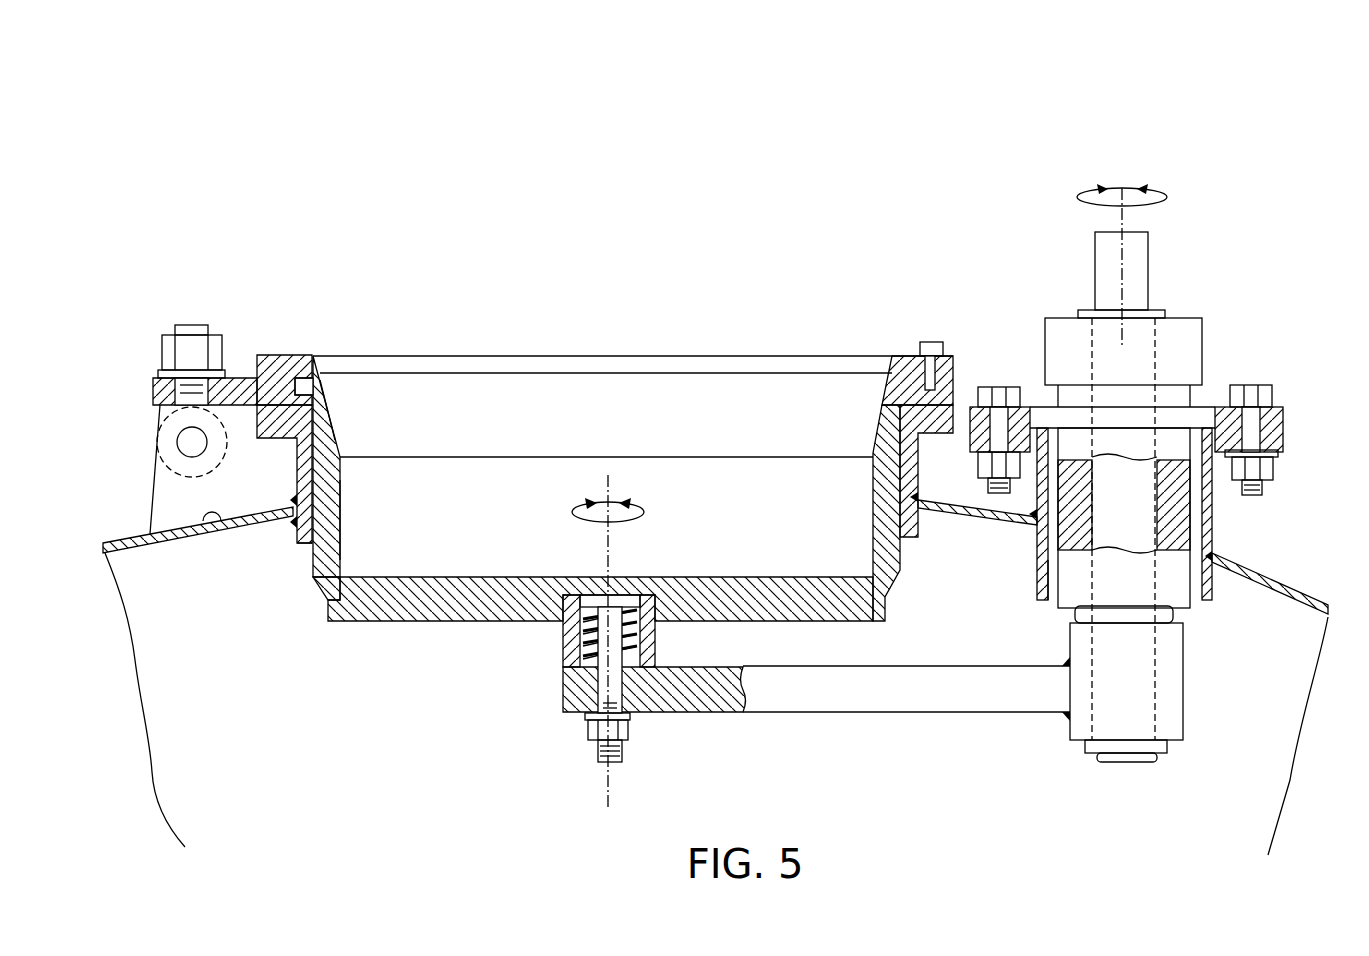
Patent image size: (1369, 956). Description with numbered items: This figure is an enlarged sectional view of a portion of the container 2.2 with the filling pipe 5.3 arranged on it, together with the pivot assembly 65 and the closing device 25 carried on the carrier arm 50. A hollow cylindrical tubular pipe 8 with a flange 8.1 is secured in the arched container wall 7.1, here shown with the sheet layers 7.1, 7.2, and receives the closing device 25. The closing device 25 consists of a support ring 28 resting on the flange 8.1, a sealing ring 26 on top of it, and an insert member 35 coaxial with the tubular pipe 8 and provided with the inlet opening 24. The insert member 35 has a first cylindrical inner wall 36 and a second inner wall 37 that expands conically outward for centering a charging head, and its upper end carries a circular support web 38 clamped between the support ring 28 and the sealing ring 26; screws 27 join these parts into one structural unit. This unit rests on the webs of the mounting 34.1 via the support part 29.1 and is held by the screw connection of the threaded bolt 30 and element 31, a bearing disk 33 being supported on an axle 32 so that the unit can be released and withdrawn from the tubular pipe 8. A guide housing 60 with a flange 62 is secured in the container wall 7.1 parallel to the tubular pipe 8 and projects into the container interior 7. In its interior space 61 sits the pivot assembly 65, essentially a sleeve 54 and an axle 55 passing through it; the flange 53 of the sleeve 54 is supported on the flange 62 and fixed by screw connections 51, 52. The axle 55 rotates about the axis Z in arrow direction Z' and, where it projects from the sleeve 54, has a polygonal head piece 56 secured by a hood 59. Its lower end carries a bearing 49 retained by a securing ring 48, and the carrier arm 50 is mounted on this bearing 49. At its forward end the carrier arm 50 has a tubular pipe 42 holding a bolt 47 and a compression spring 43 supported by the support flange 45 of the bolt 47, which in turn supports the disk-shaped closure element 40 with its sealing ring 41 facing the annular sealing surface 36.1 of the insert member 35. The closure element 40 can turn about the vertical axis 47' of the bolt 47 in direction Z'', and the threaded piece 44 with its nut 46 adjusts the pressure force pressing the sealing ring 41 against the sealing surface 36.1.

The container 2.2 is at (143, 776).
The filling pipe 5.3 is at (708, 334).
The container interior 7 is at (214, 745).
The container wall 7.1 is at (161, 538).
The sheet metal layer 7.2 is at (227, 521).
The tubular pipe 8 is at (295, 542).
The flange 8.1 is at (270, 430).
The inlet opening 24 is at (574, 404).
The closing device 25 is at (518, 770).
The sealing ring 26 is at (897, 362).
The screws 27 is at (931, 343).
The support ring 28 is at (282, 380).
The support part 29.1 is at (235, 392).
The threaded bolt 30 is at (192, 326).
The screw connection element 31 is at (165, 352).
The axle 32 is at (190, 442).
The bearing disk 33 is at (176, 462).
The mounting 34.1 is at (140, 501).
The insert member 35 is at (330, 500).
The first cylindrical inner wall 36 is at (345, 528).
The sealing surface 36.1 is at (893, 582).
The second inner wall 37 is at (335, 427).
The support web 38 is at (307, 384).
The closure element 40 is at (400, 605).
The sealing ring 41 is at (320, 586).
The tubular pipe 42 is at (656, 645).
The compression spring 43 is at (628, 612).
The threaded piece 44 is at (598, 752).
The support flange 45 is at (594, 596).
The nut 46 is at (630, 735).
The bolt 47 is at (567, 660).
The vertical axis 47' is at (642, 636).
The securing ring 48 is at (1168, 746).
The bearing 49 is at (1170, 712).
The carrier arm 50 is at (810, 694).
The screw connection 51 is at (1251, 388).
The screw connection 52 is at (1268, 467).
The flange 53 is at (1284, 418).
The sleeve 54 is at (1170, 522).
The axle 55 is at (1105, 345).
The head piece 56 is at (1105, 262).
The hood 59 is at (1175, 332).
The guide housing 60 is at (1037, 557).
The interior space 61 is at (1052, 588).
The flange 62 is at (1284, 440).
The pivot assembly 65 is at (1021, 766).
The axis Z is at (1154, 266).
The arrow direction Z' is at (1149, 192).
The rotation direction Z'' is at (582, 504).